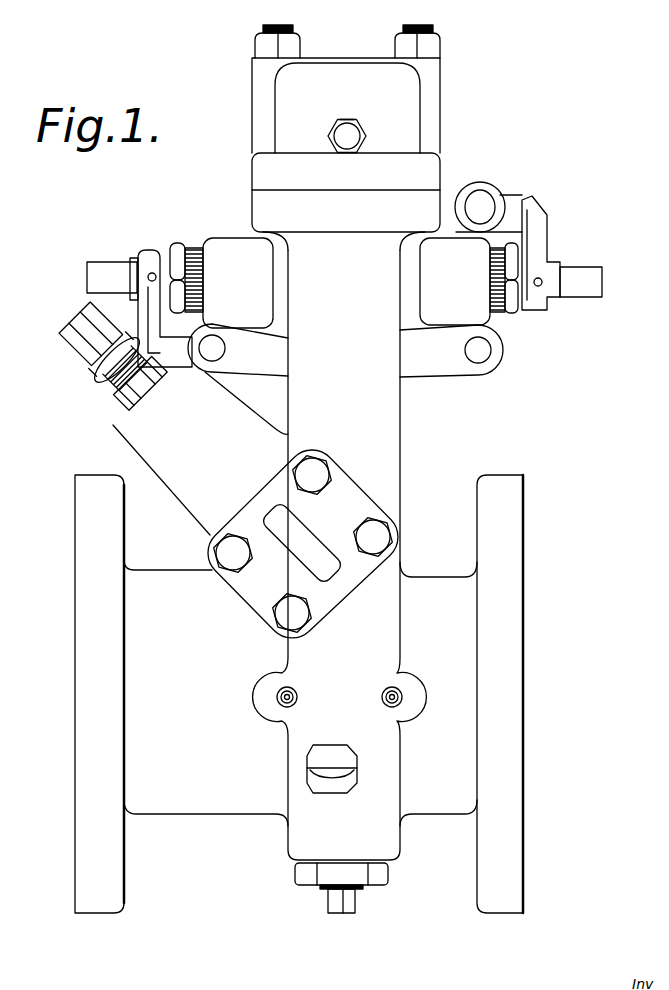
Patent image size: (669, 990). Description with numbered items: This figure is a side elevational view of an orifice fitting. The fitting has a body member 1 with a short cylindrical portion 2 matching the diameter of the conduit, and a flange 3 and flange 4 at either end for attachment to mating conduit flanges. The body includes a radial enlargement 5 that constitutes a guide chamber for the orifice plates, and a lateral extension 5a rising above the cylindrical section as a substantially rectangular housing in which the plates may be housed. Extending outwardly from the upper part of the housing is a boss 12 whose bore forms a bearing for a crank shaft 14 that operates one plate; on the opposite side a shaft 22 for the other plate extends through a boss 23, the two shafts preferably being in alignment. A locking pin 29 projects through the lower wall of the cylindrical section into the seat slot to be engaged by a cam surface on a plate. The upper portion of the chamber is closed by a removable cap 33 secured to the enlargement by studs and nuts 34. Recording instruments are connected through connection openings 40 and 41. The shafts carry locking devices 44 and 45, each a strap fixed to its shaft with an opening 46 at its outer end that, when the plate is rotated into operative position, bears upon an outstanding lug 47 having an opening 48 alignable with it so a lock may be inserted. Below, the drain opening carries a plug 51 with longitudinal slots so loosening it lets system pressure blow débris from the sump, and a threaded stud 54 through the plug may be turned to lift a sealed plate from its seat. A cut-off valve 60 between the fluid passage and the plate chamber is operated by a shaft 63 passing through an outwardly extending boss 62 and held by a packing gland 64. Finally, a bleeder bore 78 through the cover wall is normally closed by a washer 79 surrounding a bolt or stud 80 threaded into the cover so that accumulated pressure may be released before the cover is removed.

The body member 1 is at (402, 421).
The short cylindrical portion 2 is at (430, 587).
The flange 3 is at (517, 523).
The flange 4 is at (89, 502).
The radial enlargement 5 is at (300, 828).
The lateral extension 5a is at (262, 202).
The boss 12 is at (433, 258).
The crank shaft 14 is at (580, 265).
The shaft 22 is at (98, 268).
The boss 23 is at (223, 230).
The locking pin 29 is at (345, 777).
The removable cap 33 is at (433, 97).
The studs and nuts 34 is at (403, 43).
The connection opening 40 is at (400, 695).
The connection opening 41 is at (283, 698).
The locking device 44 is at (472, 184).
The locking device 45 is at (152, 317).
The opening 46 is at (482, 200).
The outstanding lug 47 is at (240, 373).
The opening 48 is at (226, 350).
The plug 51 is at (385, 870).
The threaded stud 54 is at (357, 892).
The cut-off valve 60 is at (84, 375).
The boss 62 is at (137, 442).
The shaft 63 is at (80, 341).
The packing gland 64 is at (115, 406).
The bore or passageway 78 is at (348, 119).
The washer 79 is at (368, 130).
The bolt or stud 80 is at (338, 141).